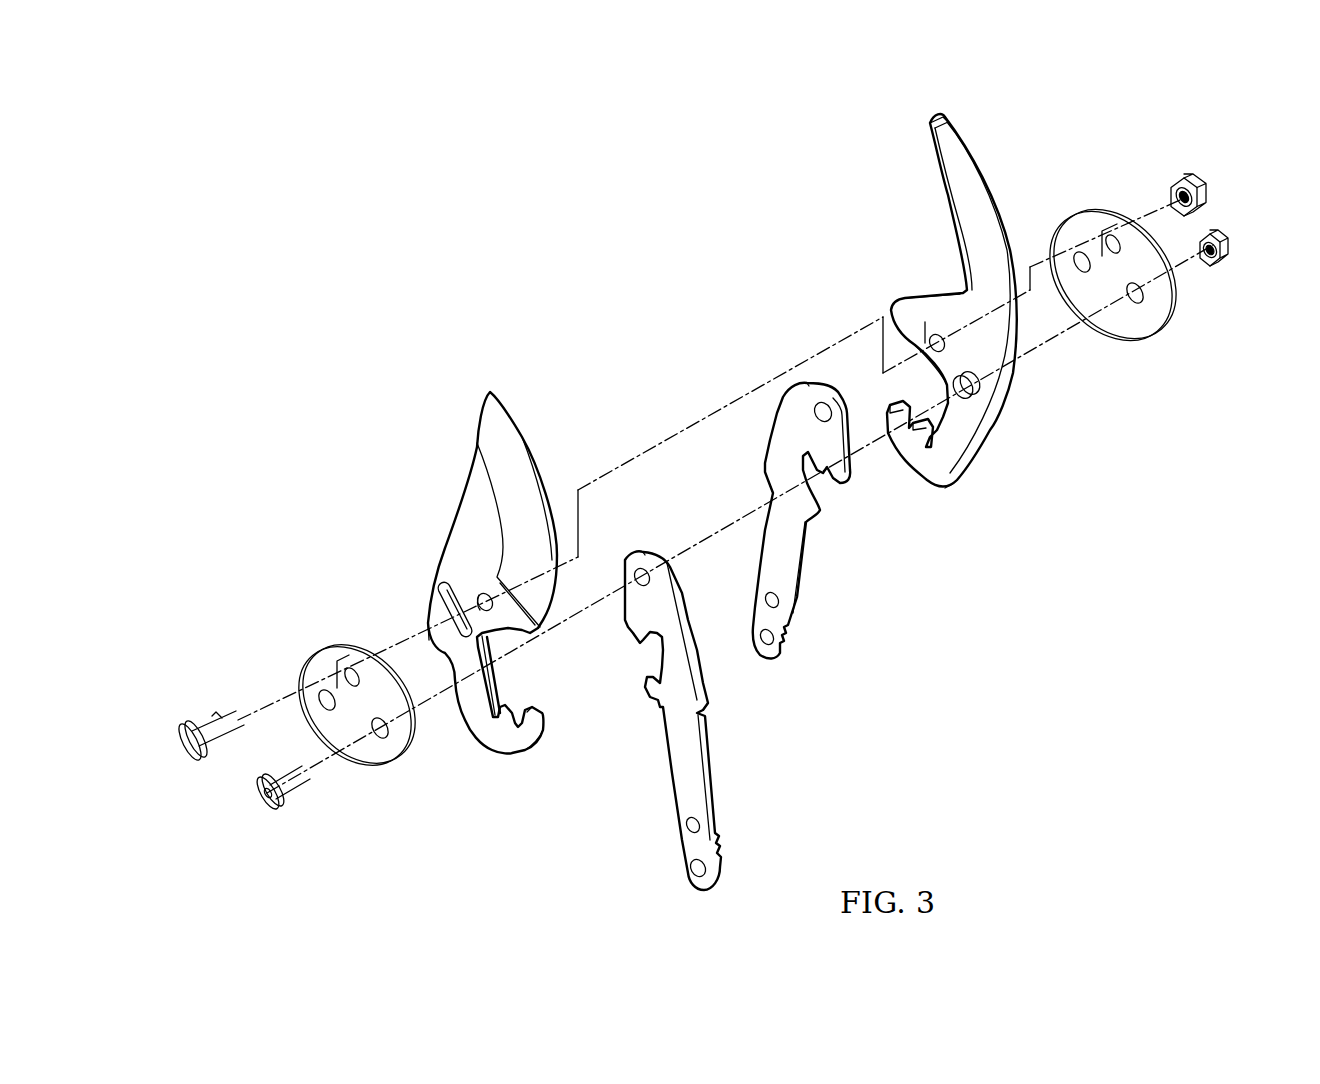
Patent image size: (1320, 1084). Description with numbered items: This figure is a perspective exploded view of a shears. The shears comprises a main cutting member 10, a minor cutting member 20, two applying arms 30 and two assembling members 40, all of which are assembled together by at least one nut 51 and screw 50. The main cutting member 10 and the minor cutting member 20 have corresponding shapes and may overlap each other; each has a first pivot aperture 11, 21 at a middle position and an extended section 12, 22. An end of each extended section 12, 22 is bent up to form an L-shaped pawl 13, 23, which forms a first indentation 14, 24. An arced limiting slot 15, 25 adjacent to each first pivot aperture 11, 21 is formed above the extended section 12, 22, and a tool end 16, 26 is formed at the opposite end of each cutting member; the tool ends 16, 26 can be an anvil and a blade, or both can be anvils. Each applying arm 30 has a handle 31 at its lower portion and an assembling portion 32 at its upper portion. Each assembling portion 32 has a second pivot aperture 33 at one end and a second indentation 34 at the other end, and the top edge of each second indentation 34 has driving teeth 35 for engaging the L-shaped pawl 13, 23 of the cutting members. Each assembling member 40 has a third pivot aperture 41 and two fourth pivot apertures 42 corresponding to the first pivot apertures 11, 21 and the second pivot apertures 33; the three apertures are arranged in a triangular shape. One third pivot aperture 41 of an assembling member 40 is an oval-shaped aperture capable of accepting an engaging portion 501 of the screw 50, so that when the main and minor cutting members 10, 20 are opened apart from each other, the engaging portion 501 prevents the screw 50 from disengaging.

The main cutting member 10 is at (484, 568).
The first pivot aperture 11 is at (485, 597).
The extended section 12 is at (452, 667).
The L-shaped pawl 13 is at (525, 737).
The first indentation 14 is at (505, 673).
The arced limiting slot 15 is at (445, 585).
The tool end 16 is at (523, 480).
The minor cutting member 20 is at (978, 332).
The first pivot aperture 21 is at (923, 300).
The extended section 22 is at (985, 440).
The L-shaped pawl 23 is at (930, 497).
The first indentation 24 is at (923, 397).
The arced limiting slot 25 is at (980, 383).
The tool end 26 is at (957, 180).
The applying arm 30 is at (755, 595).
The handle 31 is at (683, 798).
The assembling portion 32 is at (665, 607).
The second pivot aperture 33 is at (640, 567).
The second indentation 34 is at (713, 693).
The driving teeth 35 is at (653, 627).
The assembling member 40 is at (765, 499).
The third pivot aperture 41 is at (340, 657).
The fourth pivot aperture 42 is at (320, 690).
The screw 50 is at (198, 756).
The engaging portion 501 is at (213, 714).
The nut 51 is at (1204, 163).